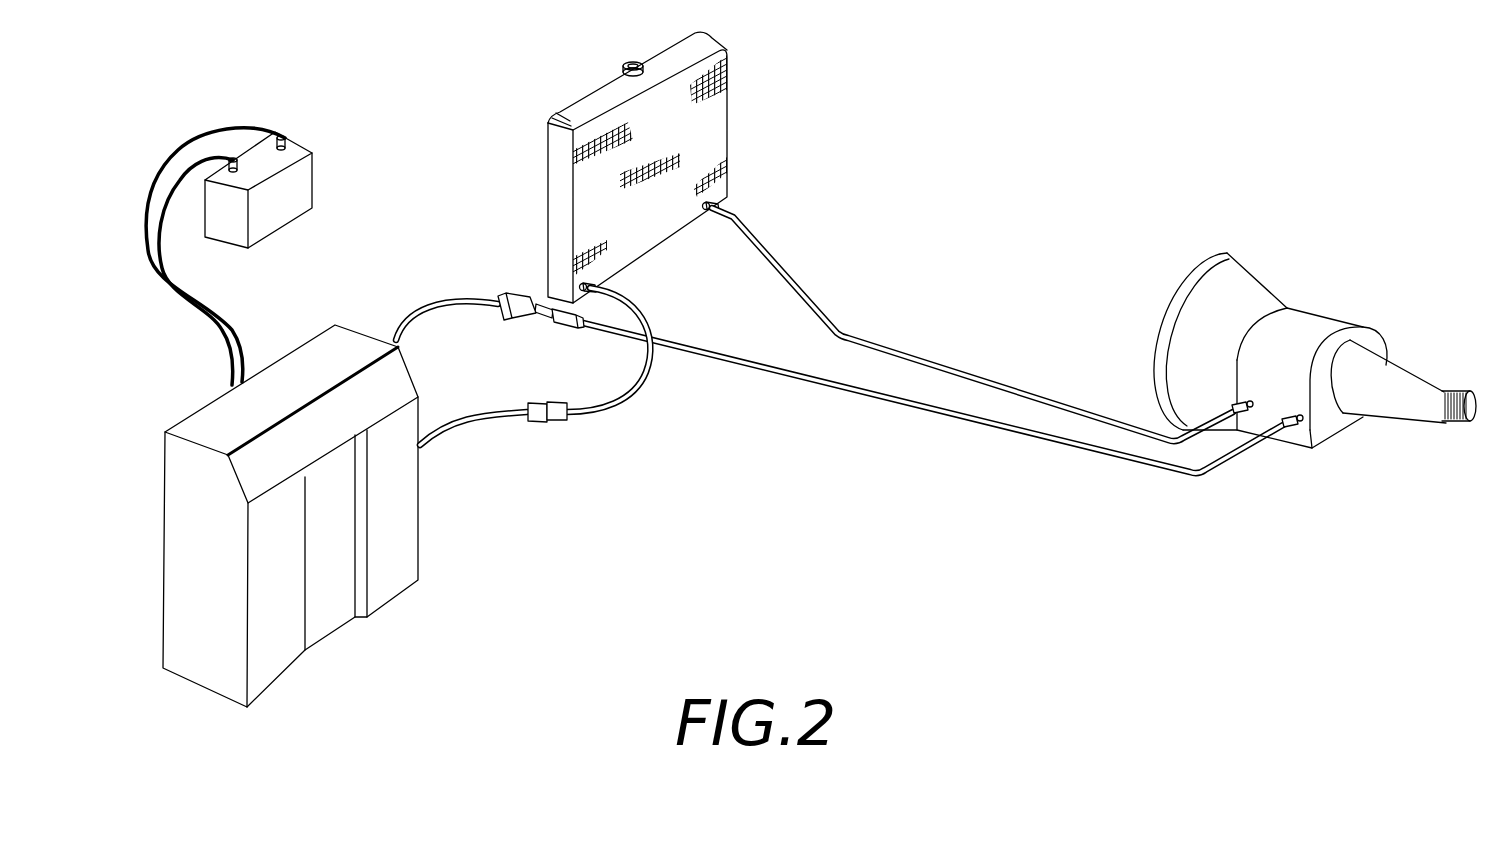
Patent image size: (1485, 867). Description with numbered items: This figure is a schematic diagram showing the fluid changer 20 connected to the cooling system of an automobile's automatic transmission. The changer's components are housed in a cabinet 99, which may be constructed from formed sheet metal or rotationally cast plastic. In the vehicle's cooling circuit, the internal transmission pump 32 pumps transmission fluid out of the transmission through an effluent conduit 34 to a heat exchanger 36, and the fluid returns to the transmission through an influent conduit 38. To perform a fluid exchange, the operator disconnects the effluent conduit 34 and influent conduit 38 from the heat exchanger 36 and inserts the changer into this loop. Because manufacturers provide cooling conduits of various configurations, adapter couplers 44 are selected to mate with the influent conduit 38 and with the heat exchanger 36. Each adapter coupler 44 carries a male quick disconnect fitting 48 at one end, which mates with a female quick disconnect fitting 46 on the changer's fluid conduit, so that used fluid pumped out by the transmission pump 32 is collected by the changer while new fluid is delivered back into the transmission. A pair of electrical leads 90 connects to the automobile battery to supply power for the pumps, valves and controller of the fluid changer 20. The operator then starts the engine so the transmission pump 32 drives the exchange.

The fluid changer 20 is at (155, 678).
The internal transmission pump 32 is at (1393, 410).
The effluent conduit 34 is at (956, 373).
The heat exchanger 36 is at (730, 117).
The influent conduit 38 is at (772, 373).
The adapter coupler 44 is at (540, 311).
The female quick disconnect fitting 46 is at (500, 309).
The male quick disconnect fitting 48 is at (523, 297).
The electrical leads 90 is at (212, 328).
The cabinet 99 is at (419, 553).